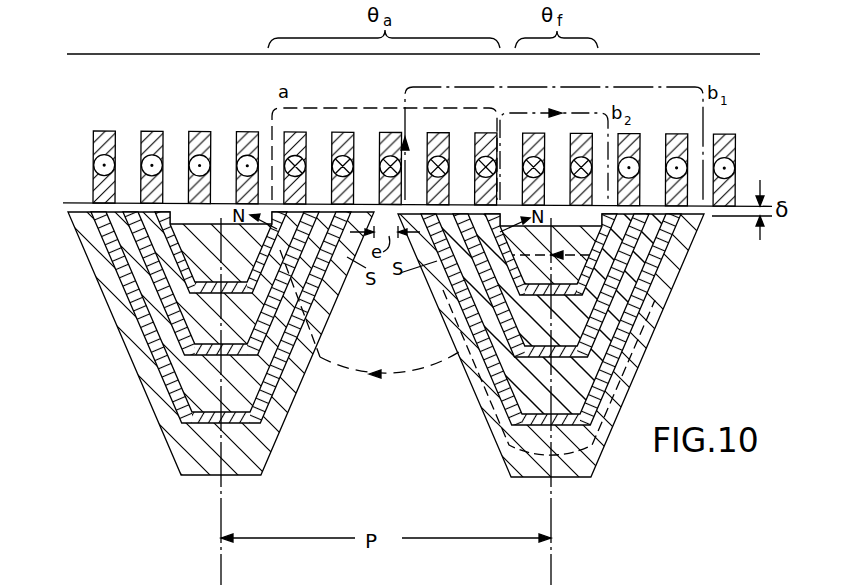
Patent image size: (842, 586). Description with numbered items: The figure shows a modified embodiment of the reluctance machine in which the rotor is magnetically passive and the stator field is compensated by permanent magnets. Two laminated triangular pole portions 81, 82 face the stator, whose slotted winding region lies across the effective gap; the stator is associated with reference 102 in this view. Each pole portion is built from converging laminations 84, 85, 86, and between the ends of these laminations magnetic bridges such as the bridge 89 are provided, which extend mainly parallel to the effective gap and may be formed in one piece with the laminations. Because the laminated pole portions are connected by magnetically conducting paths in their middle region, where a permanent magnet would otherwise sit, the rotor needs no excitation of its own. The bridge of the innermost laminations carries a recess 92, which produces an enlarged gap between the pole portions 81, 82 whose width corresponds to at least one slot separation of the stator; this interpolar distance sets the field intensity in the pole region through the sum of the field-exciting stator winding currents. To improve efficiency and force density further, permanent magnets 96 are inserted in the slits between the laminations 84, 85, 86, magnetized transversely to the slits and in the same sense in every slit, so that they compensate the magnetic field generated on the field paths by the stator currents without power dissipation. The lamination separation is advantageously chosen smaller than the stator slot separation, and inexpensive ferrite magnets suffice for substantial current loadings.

The stator core 102 is at (659, 68).
The pole portion 81 is at (286, 429).
The pole portion 82 is at (567, 348).
The lamination 84 is at (627, 230).
The lamination 85 is at (623, 307).
The lamination 86 is at (690, 230).
The magnetic bridge 89 is at (607, 340).
The recess 92 is at (224, 293).
The permanent magnets 96 is at (667, 291).